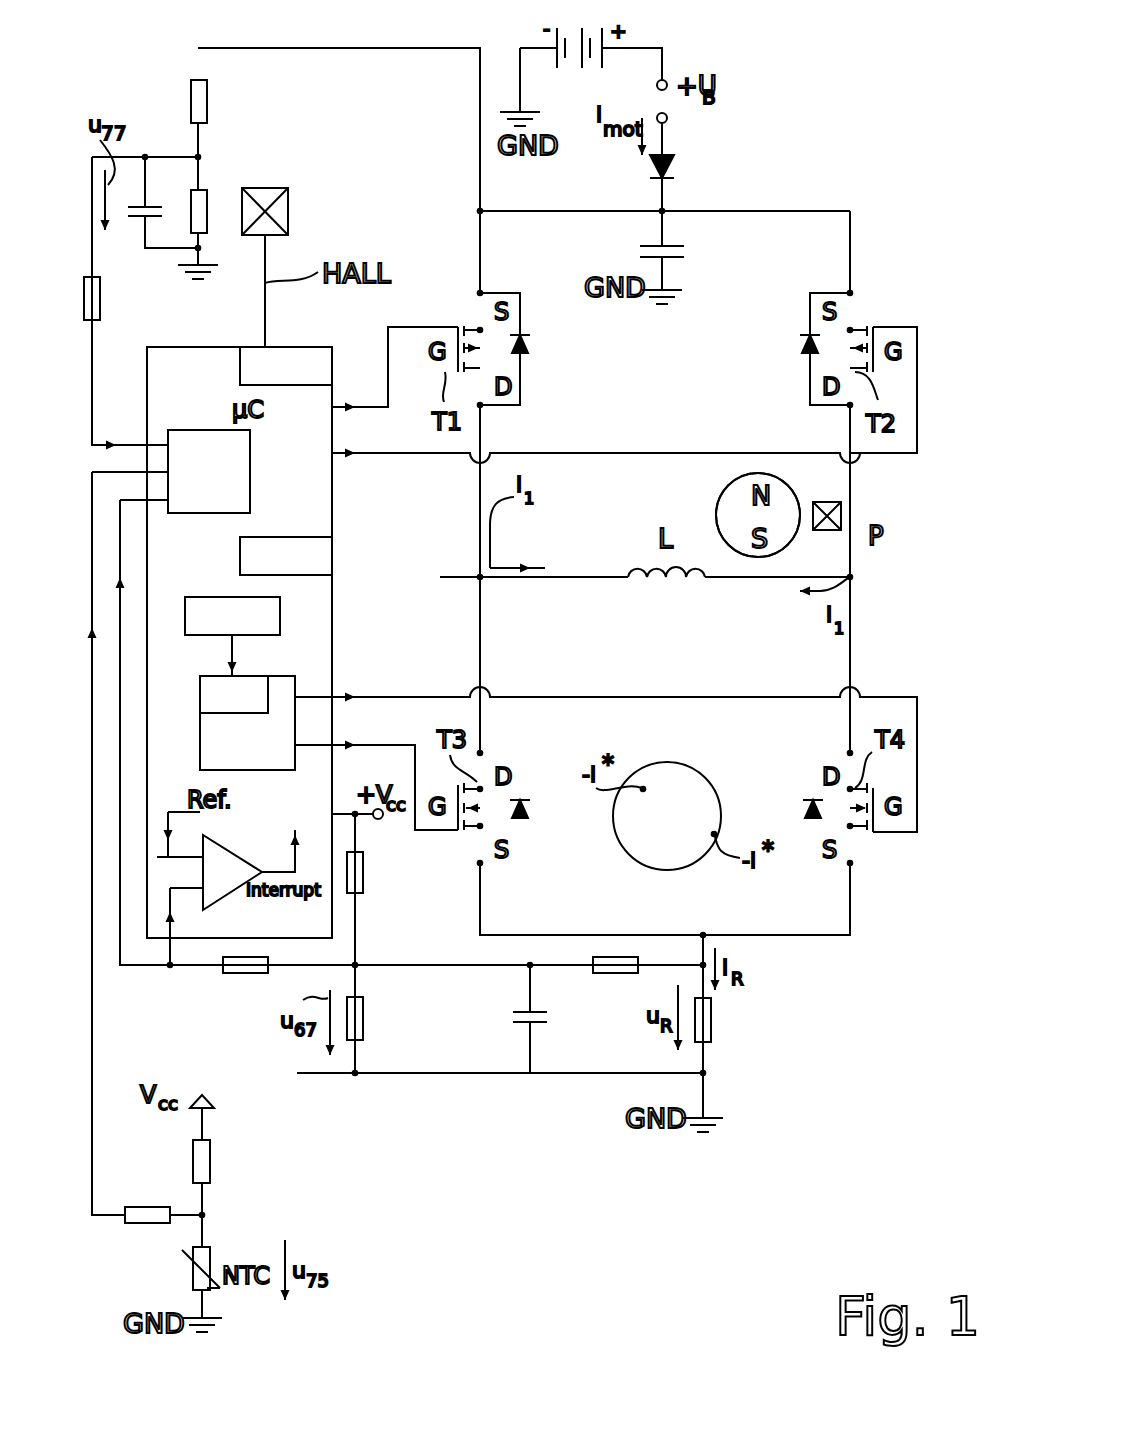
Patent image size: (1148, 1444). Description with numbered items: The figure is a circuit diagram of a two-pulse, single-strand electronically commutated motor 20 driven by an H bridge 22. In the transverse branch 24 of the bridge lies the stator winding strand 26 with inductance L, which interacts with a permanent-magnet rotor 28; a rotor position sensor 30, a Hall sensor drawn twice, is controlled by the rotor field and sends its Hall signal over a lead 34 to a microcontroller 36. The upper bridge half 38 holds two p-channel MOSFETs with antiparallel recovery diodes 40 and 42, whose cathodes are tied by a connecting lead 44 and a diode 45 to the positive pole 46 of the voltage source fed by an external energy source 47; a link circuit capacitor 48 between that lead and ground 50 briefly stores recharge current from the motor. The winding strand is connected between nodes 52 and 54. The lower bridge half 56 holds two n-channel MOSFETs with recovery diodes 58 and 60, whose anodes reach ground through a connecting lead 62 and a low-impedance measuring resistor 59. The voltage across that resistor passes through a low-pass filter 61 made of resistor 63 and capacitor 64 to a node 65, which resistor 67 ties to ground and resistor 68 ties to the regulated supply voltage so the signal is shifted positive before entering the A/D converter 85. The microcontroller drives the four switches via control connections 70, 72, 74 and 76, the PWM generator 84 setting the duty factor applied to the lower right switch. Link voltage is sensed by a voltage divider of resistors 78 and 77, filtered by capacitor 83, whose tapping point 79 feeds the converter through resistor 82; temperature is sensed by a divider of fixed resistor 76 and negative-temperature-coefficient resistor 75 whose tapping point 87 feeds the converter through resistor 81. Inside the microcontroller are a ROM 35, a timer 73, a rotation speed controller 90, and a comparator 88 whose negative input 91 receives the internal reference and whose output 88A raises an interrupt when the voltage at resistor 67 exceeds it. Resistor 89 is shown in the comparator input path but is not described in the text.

The electronically commutated motor 20 is at (674, 493).
The H bridge 22 is at (800, 188).
The transverse branch 24 is at (570, 568).
The winding strand 26 is at (641, 570).
The permanent-magnet rotor 28 is at (790, 478).
The rotor position sensor 30 is at (288, 210).
The lead 34 is at (262, 258).
The ROM 35 is at (302, 347).
The microcontroller 36 is at (306, 446).
The upper bridge half 38 is at (656, 381).
The recovery diode 40 is at (530, 347).
The recovery diode 42 is at (802, 348).
The connecting lead 44 is at (563, 211).
The diode 45 is at (676, 170).
The positive pole 46 is at (668, 116).
The external energy source 47 is at (602, 60).
The link circuit capacitor 48 is at (686, 252).
The ground 50 is at (185, 262).
The node 52 is at (440, 577).
The node 54 is at (850, 577).
The lower bridge half 56 is at (589, 916).
The recovery diode 58 is at (530, 812).
The measuring resistor 59 is at (712, 1020).
The recovery diode 60 is at (797, 816).
The low-pass filter 61 is at (590, 1066).
The connecting lead 62 is at (722, 935).
The resistor 63 is at (617, 974).
The capacitor 64 is at (513, 1012).
The node 65 is at (368, 963).
The resistor 67 is at (363, 1010).
The resistor 68 is at (363, 865).
The control connection 70 is at (386, 379).
The control connection 72 is at (668, 453).
The timer 73 is at (240, 562).
The control connection 74 is at (388, 720).
The NTC resistor 75 is at (188, 1268).
The control connection / fixed resistor 76 is at (720, 697).
The resistor 77 is at (207, 205).
The resistor 78 is at (207, 97).
The tapping point 79 is at (200, 157).
The resistor 81 is at (154, 1207).
The resistor 82 is at (100, 298).
The capacitor 83 is at (137, 224).
The PWM generator 84 is at (200, 726).
The A/D converter 85 is at (250, 470).
The tapping point 87 is at (207, 1215).
The comparator 88 is at (225, 900).
The comparator output 88A is at (275, 858).
The resistor 89 is at (243, 974).
The rotation speed controller 90 is at (280, 612).
The negative input 91 is at (193, 860).